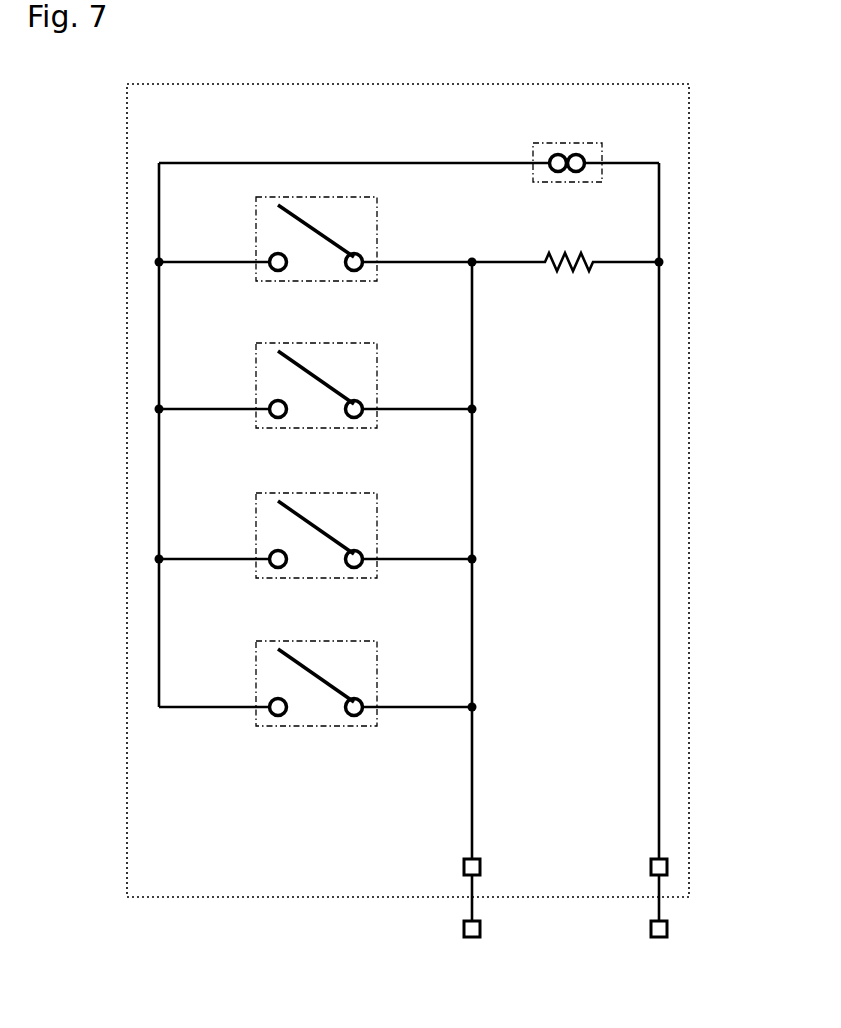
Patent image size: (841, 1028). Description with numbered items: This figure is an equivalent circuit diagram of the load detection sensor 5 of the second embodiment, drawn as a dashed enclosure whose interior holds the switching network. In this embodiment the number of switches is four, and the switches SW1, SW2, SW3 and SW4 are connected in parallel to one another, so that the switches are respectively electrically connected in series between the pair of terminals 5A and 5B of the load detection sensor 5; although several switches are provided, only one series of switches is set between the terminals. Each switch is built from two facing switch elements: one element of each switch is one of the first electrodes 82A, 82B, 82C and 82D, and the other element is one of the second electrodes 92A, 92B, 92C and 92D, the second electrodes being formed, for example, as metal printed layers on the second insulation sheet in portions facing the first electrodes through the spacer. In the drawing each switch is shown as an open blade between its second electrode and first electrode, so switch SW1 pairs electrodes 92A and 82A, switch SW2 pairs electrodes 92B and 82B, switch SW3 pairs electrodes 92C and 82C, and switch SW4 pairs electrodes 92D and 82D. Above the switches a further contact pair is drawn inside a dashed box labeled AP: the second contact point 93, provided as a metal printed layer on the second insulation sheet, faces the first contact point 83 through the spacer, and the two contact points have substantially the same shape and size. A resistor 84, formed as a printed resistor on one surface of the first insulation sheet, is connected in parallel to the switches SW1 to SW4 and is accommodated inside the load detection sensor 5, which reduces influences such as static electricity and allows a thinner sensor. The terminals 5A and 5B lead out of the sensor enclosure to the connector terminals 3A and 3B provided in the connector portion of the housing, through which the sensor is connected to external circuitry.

The load detection sensor 5 is at (150, 82).
The connector / access point AP is at (533, 150).
The second contact point 93 is at (552, 154).
The first contact point 83 is at (581, 154).
The resistor 84 is at (567, 272).
The switch SW4 is at (377, 233).
The switch SW3 is at (377, 380).
The switch SW2 is at (377, 530).
The switch SW1 is at (377, 678).
The second electrode 92D is at (278, 271).
The first electrode 82D is at (354, 271).
The second electrode 92C is at (278, 418).
The first electrode 82C is at (354, 418).
The second electrode 92B is at (278, 568).
The first electrode 82B is at (354, 568).
The second electrode 92A is at (278, 716).
The first electrode 82A is at (354, 716).
The terminal 5A is at (463, 867).
The terminal 5B is at (668, 868).
The connector terminal 3A is at (470, 938).
The connector terminal 3B is at (658, 938).